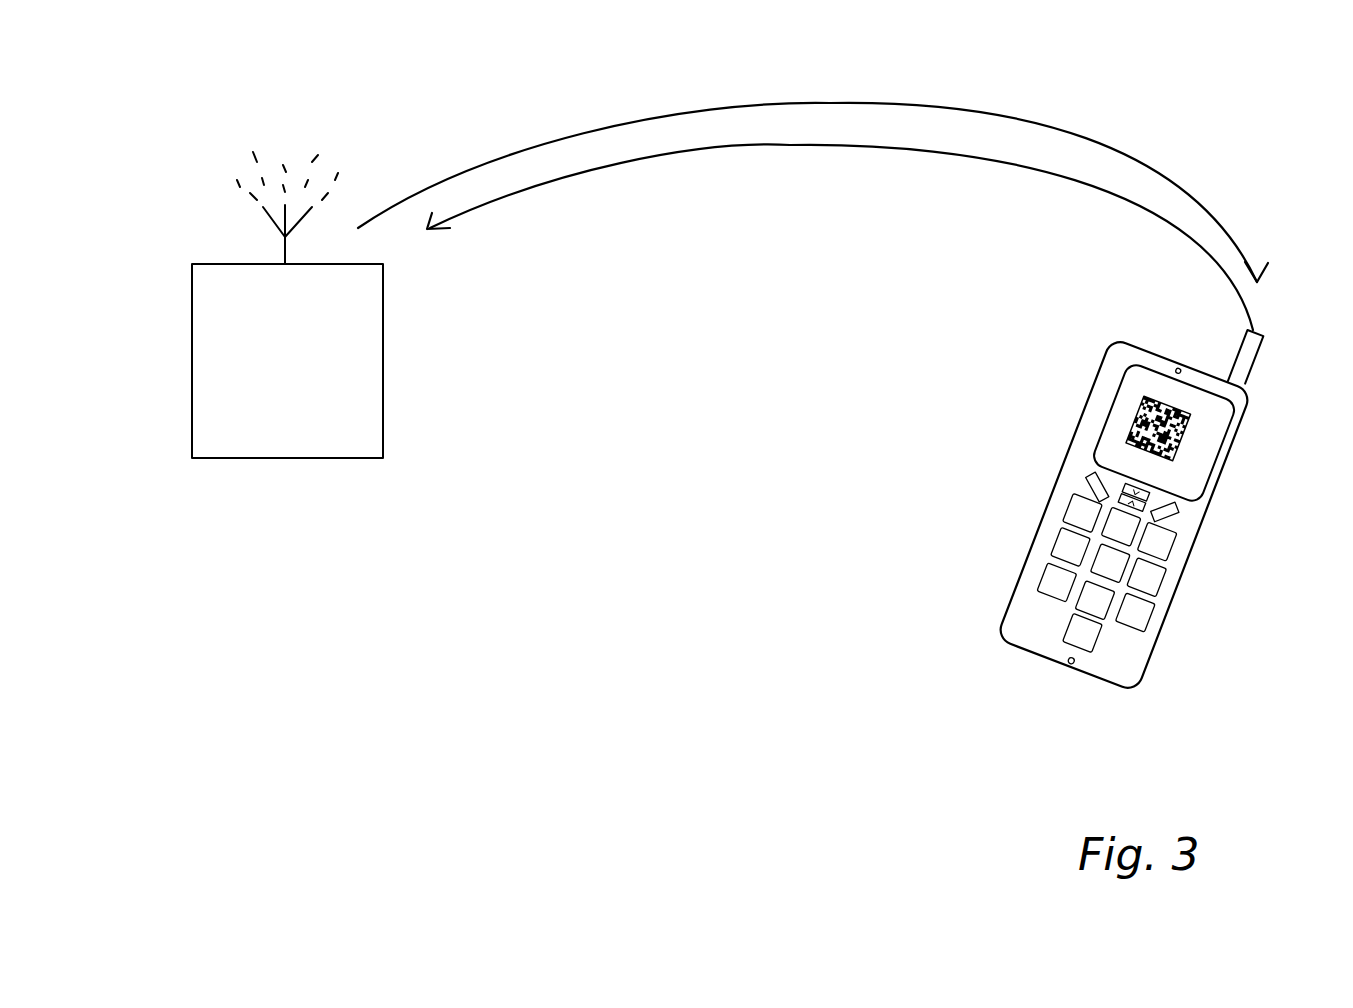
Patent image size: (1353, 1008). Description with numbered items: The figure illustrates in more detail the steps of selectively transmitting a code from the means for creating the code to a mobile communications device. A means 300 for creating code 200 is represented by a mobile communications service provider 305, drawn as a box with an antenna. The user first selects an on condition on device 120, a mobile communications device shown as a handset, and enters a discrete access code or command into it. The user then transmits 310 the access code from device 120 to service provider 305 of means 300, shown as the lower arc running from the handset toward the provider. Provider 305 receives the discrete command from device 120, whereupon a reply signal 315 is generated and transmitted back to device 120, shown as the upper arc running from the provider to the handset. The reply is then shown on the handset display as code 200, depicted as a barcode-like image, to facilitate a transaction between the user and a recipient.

The device 120 is at (1169, 509).
The code 200 is at (1190, 420).
The means for creating code 300 is at (642, 660).
The mobile communications service provider 305 is at (383, 398).
The transmits 310 is at (782, 147).
The reply signal 315 is at (790, 101).